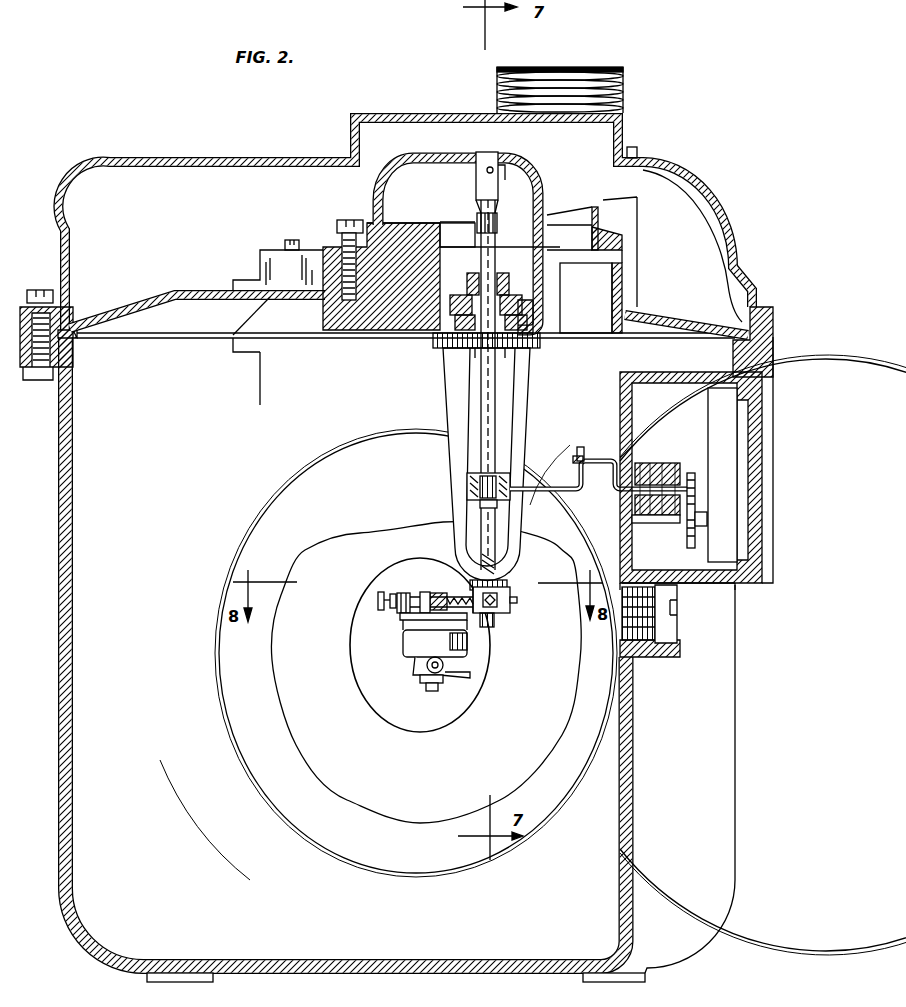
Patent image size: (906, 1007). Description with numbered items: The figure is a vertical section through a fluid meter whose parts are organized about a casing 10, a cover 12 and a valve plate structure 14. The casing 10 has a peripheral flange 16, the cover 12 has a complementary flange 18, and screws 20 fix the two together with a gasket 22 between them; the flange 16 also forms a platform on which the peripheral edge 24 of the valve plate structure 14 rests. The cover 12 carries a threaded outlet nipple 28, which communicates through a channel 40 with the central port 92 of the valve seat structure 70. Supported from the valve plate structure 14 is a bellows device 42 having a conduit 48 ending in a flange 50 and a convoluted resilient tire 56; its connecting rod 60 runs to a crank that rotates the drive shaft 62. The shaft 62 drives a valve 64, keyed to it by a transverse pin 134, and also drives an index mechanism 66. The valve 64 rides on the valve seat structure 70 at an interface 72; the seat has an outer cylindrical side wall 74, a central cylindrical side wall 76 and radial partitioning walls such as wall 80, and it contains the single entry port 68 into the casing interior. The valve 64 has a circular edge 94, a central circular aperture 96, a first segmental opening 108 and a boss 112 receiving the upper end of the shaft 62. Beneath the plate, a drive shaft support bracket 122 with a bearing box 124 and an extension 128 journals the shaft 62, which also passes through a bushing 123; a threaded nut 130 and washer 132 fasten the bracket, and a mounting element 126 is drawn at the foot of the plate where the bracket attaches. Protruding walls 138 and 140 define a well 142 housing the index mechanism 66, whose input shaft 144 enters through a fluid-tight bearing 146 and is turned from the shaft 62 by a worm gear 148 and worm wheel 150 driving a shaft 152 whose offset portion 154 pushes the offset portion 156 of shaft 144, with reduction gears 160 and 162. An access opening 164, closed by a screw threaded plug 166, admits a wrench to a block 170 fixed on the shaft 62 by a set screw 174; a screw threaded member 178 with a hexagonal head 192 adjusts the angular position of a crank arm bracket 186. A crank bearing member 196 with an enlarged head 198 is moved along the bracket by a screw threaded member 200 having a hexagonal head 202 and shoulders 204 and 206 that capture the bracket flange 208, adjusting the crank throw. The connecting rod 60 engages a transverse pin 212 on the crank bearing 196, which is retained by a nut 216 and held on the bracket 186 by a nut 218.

The casing 10 is at (60, 595).
The cover 12 is at (160, 153).
The valve plate structure 14 is at (180, 292).
The flange 16 is at (30, 380).
The flange 18 is at (25, 306).
The screws 20 is at (42, 288).
The gasket 22 is at (85, 340).
The peripheral edge 24 is at (75, 328).
The outlet nipple 28 is at (626, 78).
The channel 40 is at (533, 310).
The bellows device 42 is at (210, 478).
The conduit 48 is at (268, 366).
The flange 50 is at (233, 347).
The resilient tire 56 is at (192, 833).
The connecting rod 60 is at (460, 673).
The drive shaft 62 is at (483, 405).
The valve 64 is at (375, 200).
The index mechanism 66 is at (708, 412).
The entry port 68 is at (567, 263).
The valve seat structure 70 is at (428, 222).
The interface 72 is at (356, 222).
The cylindrical side wall 74 is at (600, 230).
The central cylindrical side wall 76 is at (452, 240).
The radial partitioning wall 80 is at (430, 235).
The port 92 is at (460, 258).
The circular edge 94 is at (603, 215).
The circular aperture 96 is at (446, 235).
The first segmental opening 108 is at (562, 216).
The boss 112 is at (498, 172).
The drive shaft support bracket 122 is at (447, 450).
The bushing 123 is at (470, 290).
The bearing box 124 is at (478, 582).
The flange 126 is at (540, 342).
The extension 128 is at (510, 348).
The threaded nut 130 is at (455, 300).
The washer 132 is at (456, 318).
The transverse pin 134 is at (485, 168).
The wall 138 is at (736, 588).
The wall 140 is at (700, 372).
The well 142 is at (668, 594).
The input shaft 144 is at (645, 478).
The fluid-tight bearing 146 is at (680, 523).
The worm gear 148 is at (507, 490).
The worm wheel 150 is at (495, 505).
The shaft 152 is at (548, 472).
The offset portion 154 is at (590, 450).
The offset portion 156 is at (588, 470).
The reduction gear 160 is at (691, 473).
The reduction gear 162 is at (700, 593).
The access opening 164 is at (621, 660).
The screw threaded plug 166 is at (622, 615).
The block 170 is at (493, 620).
The set screw 174 is at (508, 608).
The screw threaded member 178 is at (518, 600).
The crank arm bracket 186 is at (483, 628).
The hexagonal head 192 is at (470, 595).
The crank bearing member 196 is at (432, 692).
The enlarged head 198 is at (440, 595).
The screw threaded member 200 is at (410, 605).
The hexagonal head 202 is at (382, 600).
The enlarged shoulder 204 is at (383, 596).
The enlarged shoulder 206 is at (405, 622).
The flange 208 is at (400, 615).
The transverse pin 212 is at (462, 678).
The nut 216 is at (428, 686).
The nut 218 is at (415, 647).